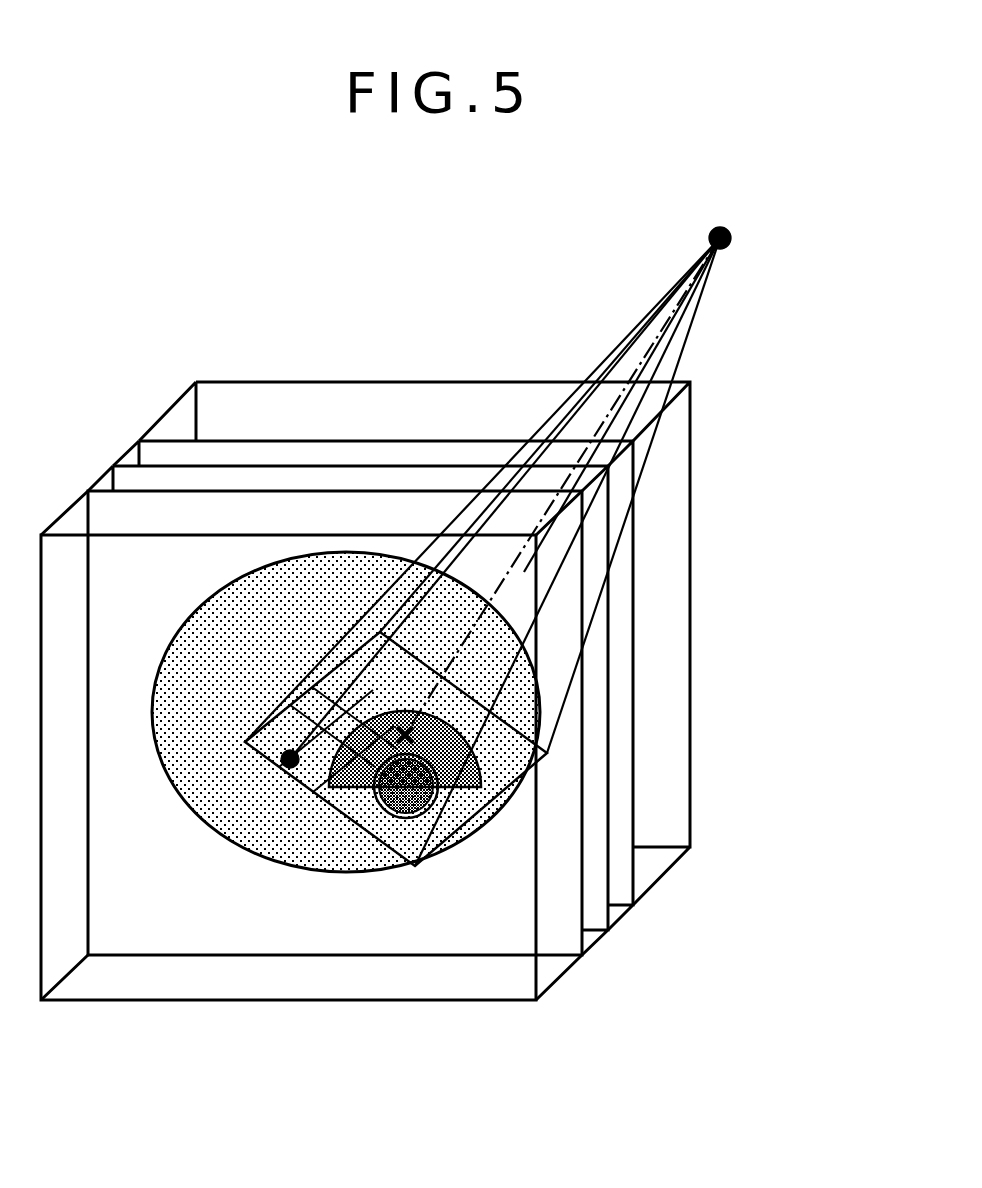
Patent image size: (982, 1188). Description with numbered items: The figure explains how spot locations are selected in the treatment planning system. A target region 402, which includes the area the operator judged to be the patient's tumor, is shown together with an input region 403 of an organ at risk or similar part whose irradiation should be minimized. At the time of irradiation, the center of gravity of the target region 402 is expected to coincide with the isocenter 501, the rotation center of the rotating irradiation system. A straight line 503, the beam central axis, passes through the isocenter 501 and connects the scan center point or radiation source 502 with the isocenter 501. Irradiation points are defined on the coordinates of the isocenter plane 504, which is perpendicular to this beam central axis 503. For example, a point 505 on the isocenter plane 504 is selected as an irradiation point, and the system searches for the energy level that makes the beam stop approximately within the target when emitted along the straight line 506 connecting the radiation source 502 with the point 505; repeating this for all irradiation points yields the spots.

The target region 402 is at (420, 737).
The input region of an organ at risk 403 is at (441, 800).
The isocenter 501 is at (320, 868).
The scan center point (radiation source) 502 is at (733, 236).
The straight line (beam central axis) 503 is at (495, 591).
The isocenter plane 504 is at (445, 843).
The point (irradiation point) 505 is at (282, 763).
The straight line 506 is at (492, 503).